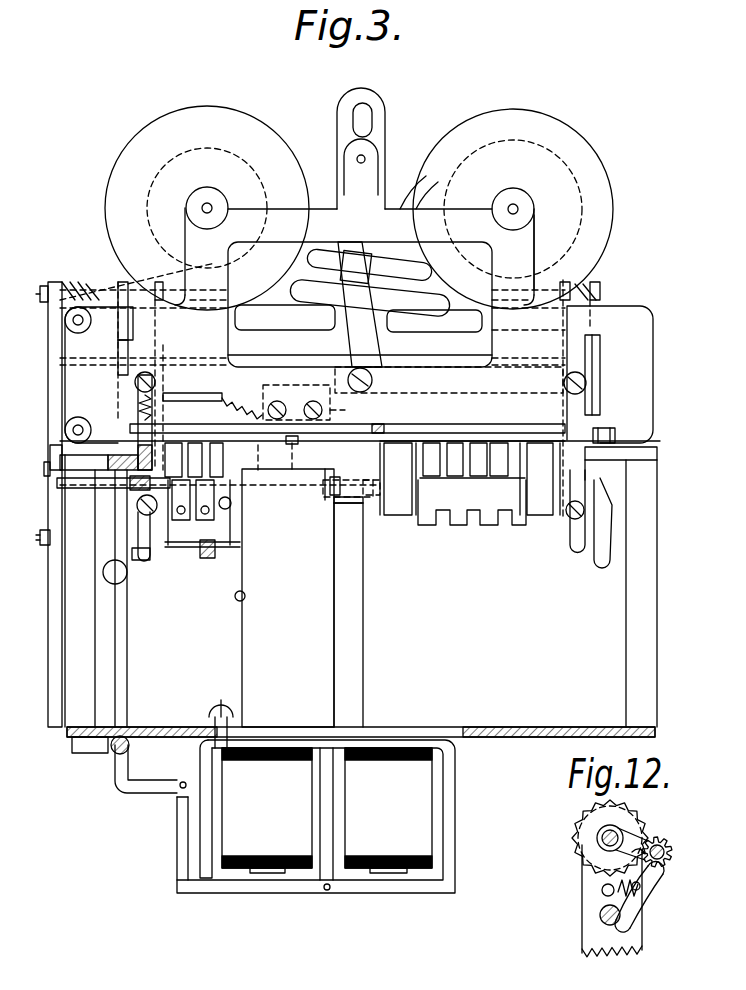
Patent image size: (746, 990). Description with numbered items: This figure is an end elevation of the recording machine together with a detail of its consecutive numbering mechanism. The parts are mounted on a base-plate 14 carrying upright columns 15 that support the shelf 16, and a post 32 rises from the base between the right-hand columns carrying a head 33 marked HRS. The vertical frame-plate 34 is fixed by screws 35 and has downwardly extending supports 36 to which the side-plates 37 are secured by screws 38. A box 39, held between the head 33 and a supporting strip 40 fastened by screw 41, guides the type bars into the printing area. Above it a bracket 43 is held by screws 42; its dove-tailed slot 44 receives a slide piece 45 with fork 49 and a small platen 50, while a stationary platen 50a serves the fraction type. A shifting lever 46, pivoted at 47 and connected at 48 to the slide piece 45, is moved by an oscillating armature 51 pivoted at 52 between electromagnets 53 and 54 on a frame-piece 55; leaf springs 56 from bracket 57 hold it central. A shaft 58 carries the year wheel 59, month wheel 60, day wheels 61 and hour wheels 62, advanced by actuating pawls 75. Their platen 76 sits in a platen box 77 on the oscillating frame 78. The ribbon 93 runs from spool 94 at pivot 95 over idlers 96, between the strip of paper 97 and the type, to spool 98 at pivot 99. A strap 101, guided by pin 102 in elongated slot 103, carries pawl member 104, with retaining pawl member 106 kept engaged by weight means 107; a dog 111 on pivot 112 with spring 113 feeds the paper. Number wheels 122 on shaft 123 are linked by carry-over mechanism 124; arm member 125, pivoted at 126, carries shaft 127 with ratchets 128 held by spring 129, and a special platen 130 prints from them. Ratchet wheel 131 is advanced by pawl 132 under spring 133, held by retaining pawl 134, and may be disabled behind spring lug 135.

In FIG. 3, the base-plate 14 is at (520, 738).
In FIG. 3, the upright column 15 is at (65, 689).
In FIG. 3, the shelf 16 is at (660, 453).
In FIG. 3, the post 32 is at (353, 627).
In FIG. 3, the head 33 is at (352, 506).
In FIG. 3, the vertical frame-plate 34 is at (536, 251).
In FIG. 3, the screw 35 is at (618, 432).
In FIG. 3, the downwardly extending support 36 is at (138, 522).
In FIG. 3, the side-plate 37 is at (138, 400).
In FIG. 3, the screw 38 is at (135, 383).
In FIG. 3, the box 39 is at (290, 472).
In FIG. 3, the supporting strip 40 is at (243, 643).
In FIG. 12, the supporting strip 40 is at (614, 953).
In FIG. 3, the screw 41 is at (213, 712).
In FIG. 3, the screw 42 is at (280, 402).
In FIG. 3, the bracket 43 is at (332, 411).
In FIG. 3, the dove-tailed slot 44 is at (316, 482).
In FIG. 3, the slide piece 45 is at (256, 472).
In FIG. 3, the shifting lever 46 is at (127, 678).
In FIG. 3, the pivot 47 is at (130, 748).
In FIG. 3, the pivotal connection 48 is at (140, 405).
In FIG. 3, the fork 49 is at (194, 424).
In FIG. 3, the platen 50 is at (291, 475).
In FIG. 3, the stationary platen 50a is at (330, 435).
In FIG. 3, the oscillating armature 51 is at (240, 894).
In FIG. 3, the pivot 52 is at (327, 893).
In FIG. 3, the electromagnet 53 is at (237, 852).
In FIG. 3, the electromagnet 54 is at (408, 852).
In FIG. 3, the frame-piece 55 is at (450, 791).
In FIG. 3, the leaf spring 56 is at (128, 588).
In FIG. 3, the bracket 57 is at (140, 560).
In FIG. 3, the shaft 58 is at (383, 513).
In FIG. 3, the year wheel 59 is at (541, 517).
In FIG. 3, the month wheel 60 is at (402, 516).
In FIG. 3, the day wheel 61 is at (432, 478).
In FIG. 3, the hour wheel 62 is at (454, 478).
In FIG. 3, the actuating pawl 75 is at (490, 480).
In FIG. 3, the platen 76 is at (493, 394).
In FIG. 3, the platen box 77 is at (462, 360).
In FIG. 3, the oscillating frame 78 is at (159, 284).
In FIG. 3, the ribbon 93 is at (66, 372).
In FIG. 3, the spool 94 is at (126, 148).
In FIG. 3, the pivot 95 is at (202, 208).
In FIG. 3, the idler 96 is at (64, 321).
In FIG. 3, the strip of paper 97 is at (527, 440).
In FIG. 3, the spool 98 is at (609, 184).
In FIG. 3, the pivot 99 is at (519, 209).
In FIG. 3, the strap 101 is at (343, 99).
In FIG. 3, the pin 102 is at (366, 158).
In FIG. 3, the elongated slot 103 is at (366, 108).
In FIG. 3, the pawl member 104 is at (413, 177).
In FIG. 3, the retaining pawl member 106 is at (318, 258).
In FIG. 3, the weight means 107 is at (401, 306).
In FIG. 3, the dog 111 is at (598, 351).
In FIG. 3, the pivot 112 is at (40, 290).
In FIG. 3, the spring 113 is at (123, 287).
In FIG. 3, the number wheel 122 is at (138, 485).
In FIG. 12, the number wheel 122 is at (572, 845).
In FIG. 3, the shaft 123 is at (110, 483).
In FIG. 12, the shaft 123 is at (619, 834).
In FIG. 3, the carry-over mechanism 124 is at (229, 507).
In FIG. 12, the carry-over mechanism 124 is at (673, 851).
In FIG. 3, the arm member 125 is at (179, 548).
In FIG. 12, the arm member 125 is at (644, 888).
In FIG. 3, the pivot 126 is at (246, 599).
In FIG. 12, the pivot 126 is at (600, 917).
In FIG. 12, the shaft 127 is at (668, 861).
In FIG. 12, the ratchet 128 is at (658, 844).
In FIG. 3, the spring 129 is at (205, 556).
In FIG. 12, the spring 129 is at (637, 900).
In FIG. 3, the special platen 130 is at (176, 396).
In FIG. 3, the ratchet wheel 131 is at (48, 453).
In FIG. 3, the pawl 132 is at (50, 391).
In FIG. 3, the spring 133 is at (68, 282).
In FIG. 3, the retaining pawl 134 is at (40, 540).
In FIG. 3, the spring lug 135 is at (44, 469).